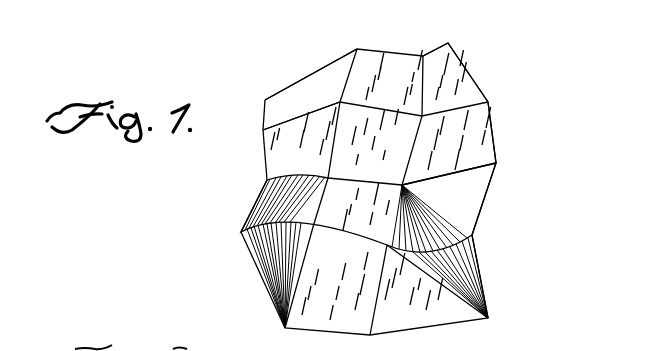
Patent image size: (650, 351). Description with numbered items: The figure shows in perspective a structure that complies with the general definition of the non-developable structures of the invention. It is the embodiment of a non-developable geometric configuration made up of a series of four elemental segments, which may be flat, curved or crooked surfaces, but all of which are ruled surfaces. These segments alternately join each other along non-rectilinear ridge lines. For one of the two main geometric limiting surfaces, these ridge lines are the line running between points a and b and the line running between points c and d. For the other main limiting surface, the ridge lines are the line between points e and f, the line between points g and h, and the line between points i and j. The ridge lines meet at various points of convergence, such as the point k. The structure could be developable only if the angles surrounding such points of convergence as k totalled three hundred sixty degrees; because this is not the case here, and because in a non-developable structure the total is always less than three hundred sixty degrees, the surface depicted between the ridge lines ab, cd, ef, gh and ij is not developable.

The ridge line end point a is at (289, 122).
The ridge line end point b is at (497, 126).
The ridge line end point c is at (304, 212).
The ridge line end point d is at (438, 218).
The ridge line end point e is at (298, 79).
The ridge line end point f is at (455, 66).
The ridge line end point g is at (285, 200).
The ridge line end point h is at (459, 193).
The ridge line end point i is at (274, 285).
The ridge line end point j is at (454, 285).
The point of convergence k is at (365, 187).